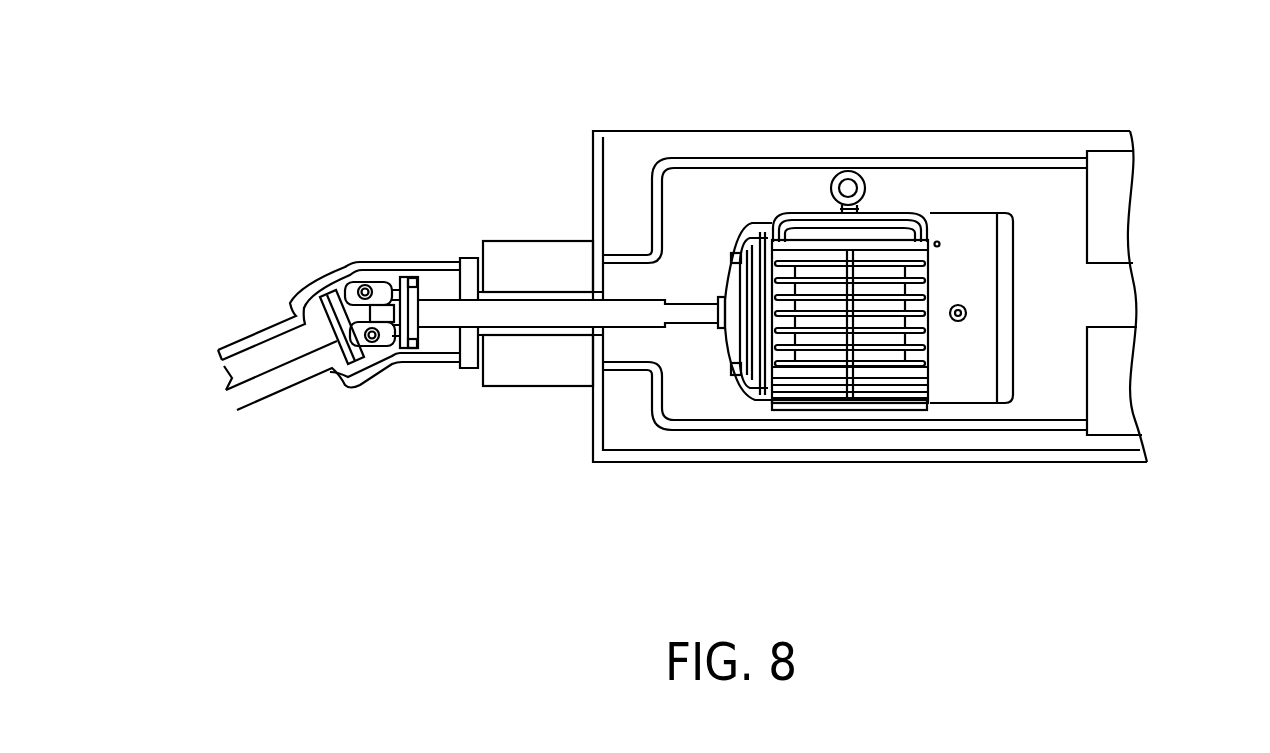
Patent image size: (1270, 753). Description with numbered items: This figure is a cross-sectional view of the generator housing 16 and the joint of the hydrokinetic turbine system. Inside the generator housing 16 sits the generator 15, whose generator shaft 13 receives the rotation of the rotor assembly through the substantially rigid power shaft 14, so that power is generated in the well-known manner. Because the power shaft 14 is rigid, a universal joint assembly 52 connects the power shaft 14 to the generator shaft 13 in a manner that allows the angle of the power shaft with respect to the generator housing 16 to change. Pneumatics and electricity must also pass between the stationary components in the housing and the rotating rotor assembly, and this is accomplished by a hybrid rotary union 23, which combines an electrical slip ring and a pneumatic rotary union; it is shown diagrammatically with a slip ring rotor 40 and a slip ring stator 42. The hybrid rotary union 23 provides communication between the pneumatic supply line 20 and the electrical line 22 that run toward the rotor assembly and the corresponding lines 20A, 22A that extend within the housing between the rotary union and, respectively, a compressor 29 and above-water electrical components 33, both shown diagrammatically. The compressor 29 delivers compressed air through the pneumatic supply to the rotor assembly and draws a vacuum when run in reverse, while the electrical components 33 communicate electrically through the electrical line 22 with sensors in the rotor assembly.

The generator shaft 13 is at (560, 315).
The power shaft 14 is at (272, 365).
The generator 15 is at (897, 203).
The generator housing 16 is at (637, 130).
The pneumatic supply line 20 is at (247, 337).
The pneumatic line 20A is at (733, 162).
The electrical line 22 is at (300, 377).
The electrical line 22A is at (725, 425).
The hybrid rotary union 23 is at (513, 262).
The compressor 29 is at (1123, 186).
The electrical components 33 is at (1126, 402).
The slip ring rotor 40 is at (468, 358).
The slip ring stator 42 is at (503, 373).
The universal joint assembly 52 is at (352, 280).